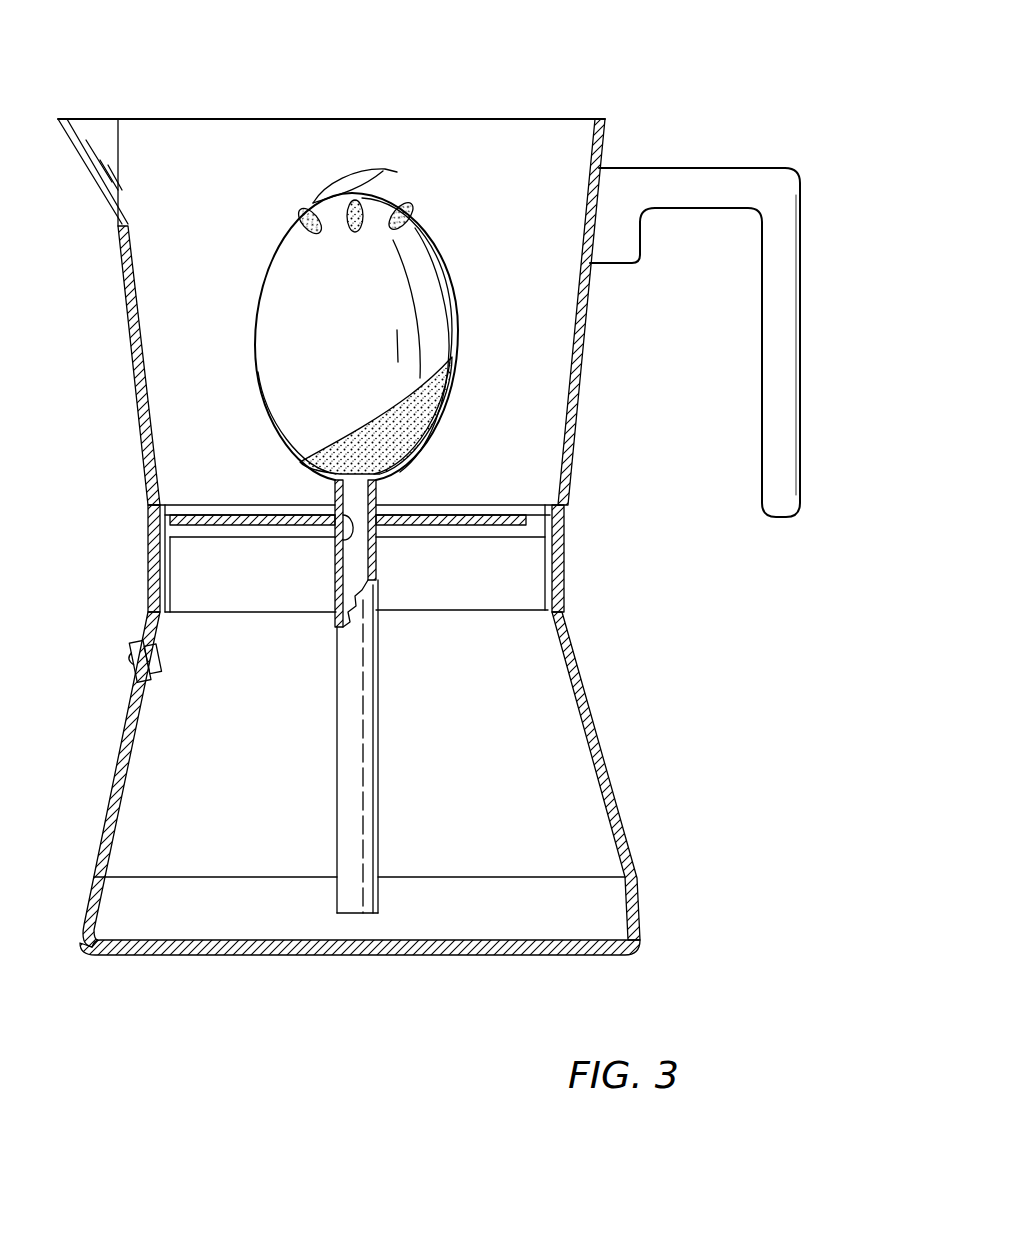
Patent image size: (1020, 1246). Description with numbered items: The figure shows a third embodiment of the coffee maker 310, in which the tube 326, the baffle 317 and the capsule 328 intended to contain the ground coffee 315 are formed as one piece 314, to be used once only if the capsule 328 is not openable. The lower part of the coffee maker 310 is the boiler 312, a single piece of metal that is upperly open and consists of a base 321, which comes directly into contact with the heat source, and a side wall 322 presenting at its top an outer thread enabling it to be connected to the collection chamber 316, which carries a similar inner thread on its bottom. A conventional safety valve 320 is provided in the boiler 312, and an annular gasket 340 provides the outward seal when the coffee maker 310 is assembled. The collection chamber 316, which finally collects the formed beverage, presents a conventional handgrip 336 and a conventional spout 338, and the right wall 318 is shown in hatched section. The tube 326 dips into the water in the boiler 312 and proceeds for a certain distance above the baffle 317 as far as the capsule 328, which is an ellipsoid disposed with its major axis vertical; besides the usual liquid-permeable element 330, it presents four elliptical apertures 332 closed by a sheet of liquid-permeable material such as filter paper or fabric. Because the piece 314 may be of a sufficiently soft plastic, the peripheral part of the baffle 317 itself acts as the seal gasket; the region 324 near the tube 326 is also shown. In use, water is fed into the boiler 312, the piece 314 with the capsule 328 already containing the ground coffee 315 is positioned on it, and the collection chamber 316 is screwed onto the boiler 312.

The coffee maker 310 is at (120, 531).
The boiler 312 is at (606, 752).
The one piece 314 is at (330, 493).
The ground coffee 315 is at (432, 424).
The collection chamber 316 is at (130, 394).
The baffle 317 is at (224, 530).
The upper vessel right wall 318 is at (585, 371).
The safety valve 320 is at (130, 665).
The base 321 is at (548, 956).
The side wall 322 is at (112, 767).
The valve 324 is at (335, 553).
The tube 326 is at (382, 818).
The capsule 328 is at (263, 382).
The liquid-permeable element 330 is at (358, 472).
The elliptical apertures 332 is at (388, 204).
The handgrip 336 is at (760, 363).
The spout 338 is at (92, 177).
The annular gasket 340 is at (543, 535).